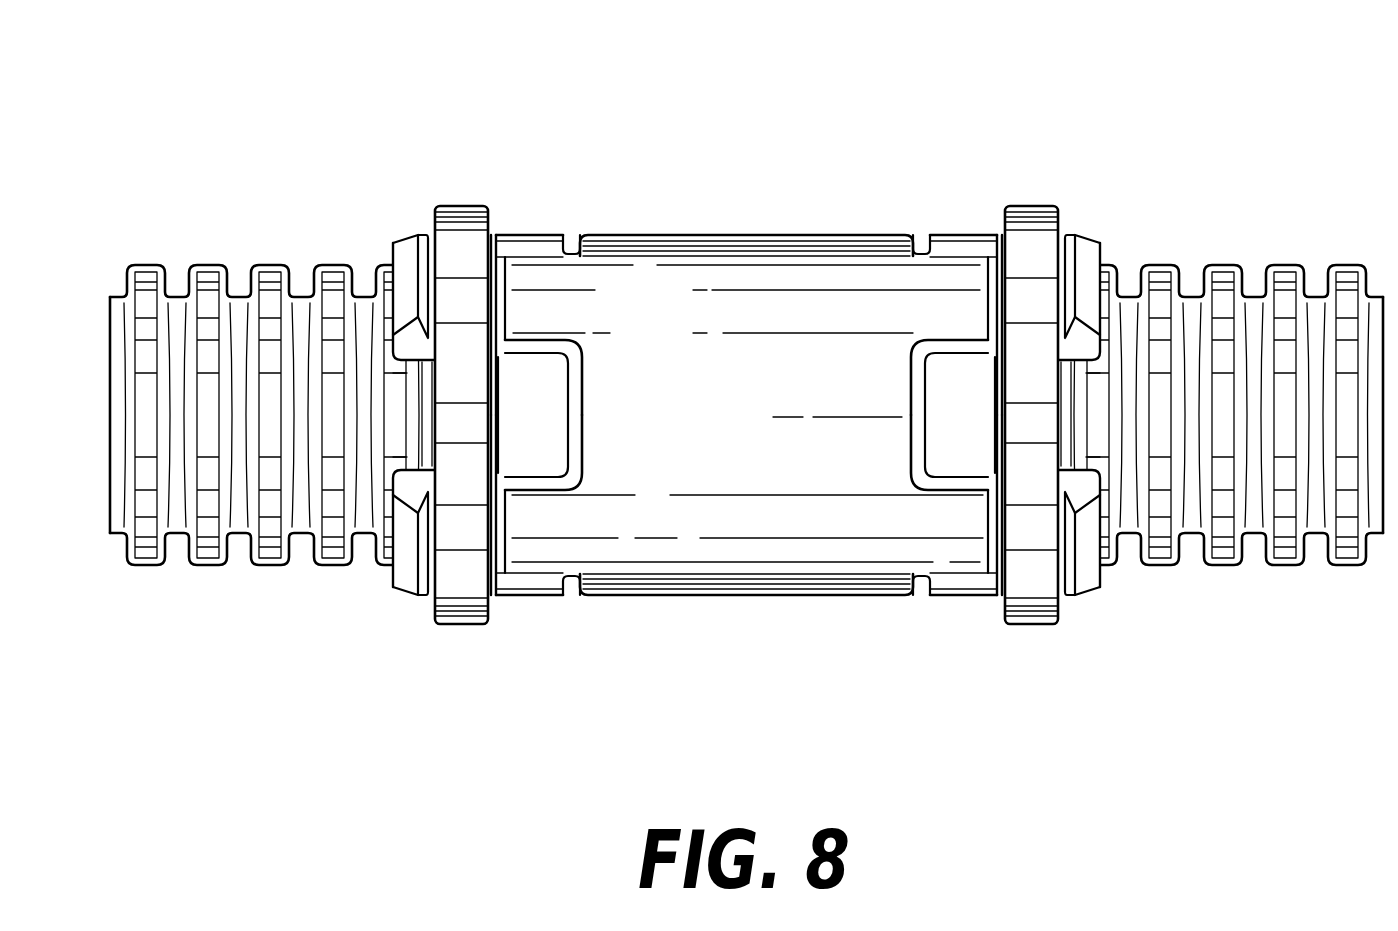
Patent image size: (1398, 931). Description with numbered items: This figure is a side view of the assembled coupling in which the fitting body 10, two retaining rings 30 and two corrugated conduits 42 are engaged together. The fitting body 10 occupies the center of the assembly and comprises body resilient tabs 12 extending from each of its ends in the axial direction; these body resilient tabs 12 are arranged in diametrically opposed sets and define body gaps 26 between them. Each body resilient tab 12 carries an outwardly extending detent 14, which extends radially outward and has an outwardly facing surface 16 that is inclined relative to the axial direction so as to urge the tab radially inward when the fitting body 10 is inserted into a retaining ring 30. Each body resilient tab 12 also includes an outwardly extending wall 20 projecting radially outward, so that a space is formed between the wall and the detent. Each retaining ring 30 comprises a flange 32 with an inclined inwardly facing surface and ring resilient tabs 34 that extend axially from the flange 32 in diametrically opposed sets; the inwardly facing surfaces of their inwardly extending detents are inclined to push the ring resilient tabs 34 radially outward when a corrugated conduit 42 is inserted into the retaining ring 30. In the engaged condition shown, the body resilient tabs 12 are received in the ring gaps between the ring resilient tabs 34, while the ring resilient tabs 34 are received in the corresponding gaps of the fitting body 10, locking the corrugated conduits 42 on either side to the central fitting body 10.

The fitting body 10 is at (742, 217).
The body resilient tabs 12 is at (410, 345).
The outwardly extending detent 14 is at (405, 245).
The outwardly facing surface 16 is at (410, 237).
The outwardly extending wall 20 is at (500, 235).
The body gaps 26 is at (572, 235).
The retaining ring 30 is at (450, 188).
The flange 32 is at (457, 613).
The ring resilient tabs 34 is at (967, 403).
The corrugated conduit 42 is at (272, 566).